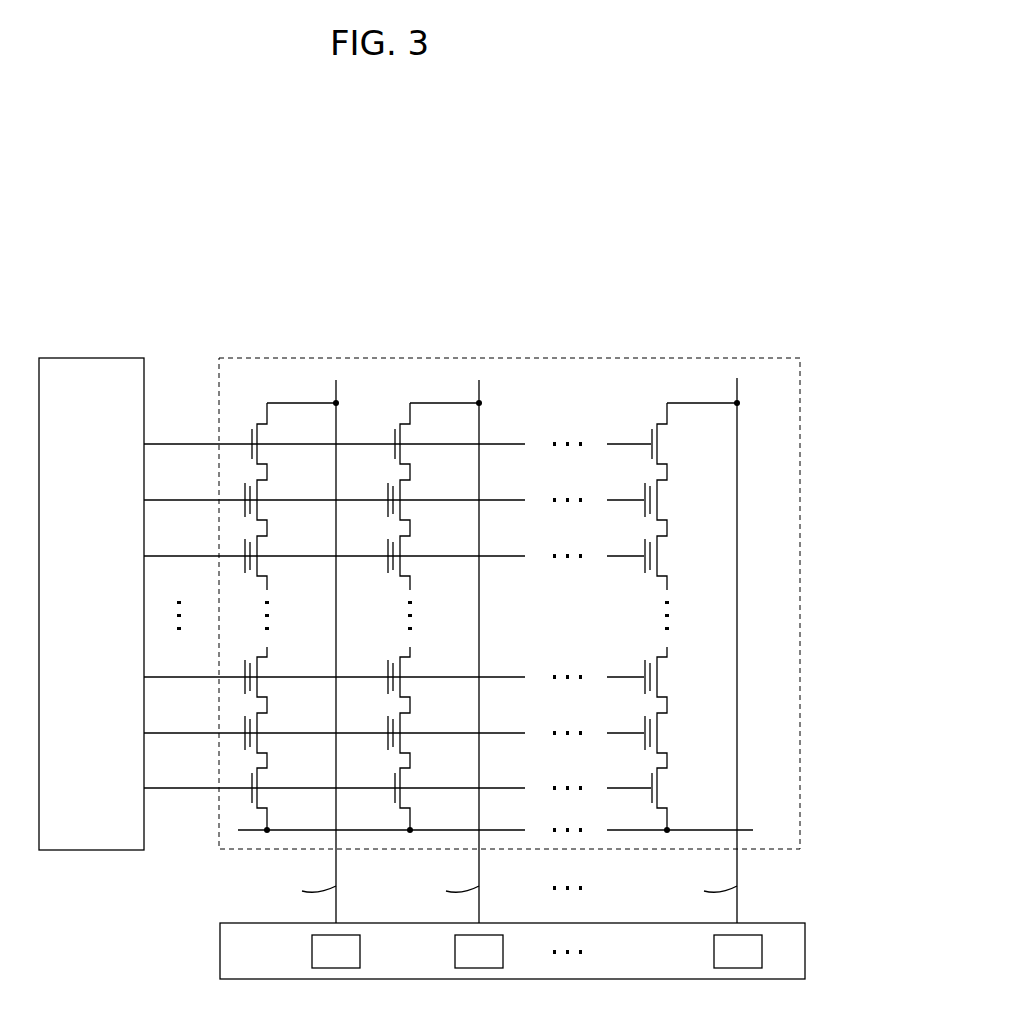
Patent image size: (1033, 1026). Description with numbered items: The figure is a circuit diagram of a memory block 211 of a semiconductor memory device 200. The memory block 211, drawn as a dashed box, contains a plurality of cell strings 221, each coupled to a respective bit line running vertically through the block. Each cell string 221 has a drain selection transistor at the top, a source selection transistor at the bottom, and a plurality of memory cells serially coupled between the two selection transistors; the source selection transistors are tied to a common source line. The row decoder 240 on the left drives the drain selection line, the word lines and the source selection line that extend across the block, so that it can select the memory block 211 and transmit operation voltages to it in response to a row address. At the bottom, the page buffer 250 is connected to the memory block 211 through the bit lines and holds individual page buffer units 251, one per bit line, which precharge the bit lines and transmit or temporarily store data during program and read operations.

The memory device 200 is at (779, 274).
The memory block 211 is at (703, 358).
The cell string 221 is at (258, 402).
The row decoder 240 is at (93, 358).
The page buffer 250 is at (481, 951).
The page buffer 251 is at (312, 951).